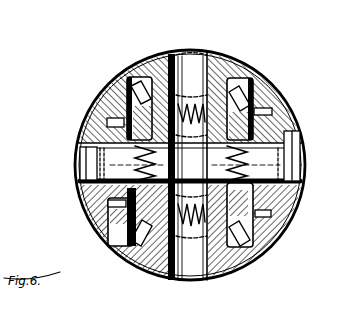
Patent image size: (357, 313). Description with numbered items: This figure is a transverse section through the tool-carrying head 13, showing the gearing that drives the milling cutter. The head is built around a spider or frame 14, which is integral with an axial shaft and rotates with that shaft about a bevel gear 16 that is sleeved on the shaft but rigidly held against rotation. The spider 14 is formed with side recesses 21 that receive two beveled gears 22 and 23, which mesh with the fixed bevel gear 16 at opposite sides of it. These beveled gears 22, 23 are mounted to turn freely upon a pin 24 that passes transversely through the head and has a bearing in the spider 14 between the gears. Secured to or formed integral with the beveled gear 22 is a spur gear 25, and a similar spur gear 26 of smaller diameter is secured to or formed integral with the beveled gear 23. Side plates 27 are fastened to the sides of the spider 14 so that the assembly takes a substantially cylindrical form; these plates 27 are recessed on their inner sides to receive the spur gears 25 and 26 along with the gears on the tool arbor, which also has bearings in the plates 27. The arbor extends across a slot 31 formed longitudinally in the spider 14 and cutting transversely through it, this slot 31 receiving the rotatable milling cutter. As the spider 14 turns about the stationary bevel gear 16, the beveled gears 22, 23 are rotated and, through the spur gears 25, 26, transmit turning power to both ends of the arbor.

The tool-carrying head 13 is at (177, 148).
The spider or frame 14 is at (217, 62).
The bevel gear 16 is at (191, 229).
The side recesses 21 is at (145, 77).
The beveled gear 22 is at (255, 94).
The beveled gear 23 is at (127, 80).
The pin 24 is at (284, 155).
The spur gear 25 is at (272, 112).
The spur gear 26 is at (110, 203).
The side plates 27 is at (110, 97).
The slot 31 is at (192, 58).